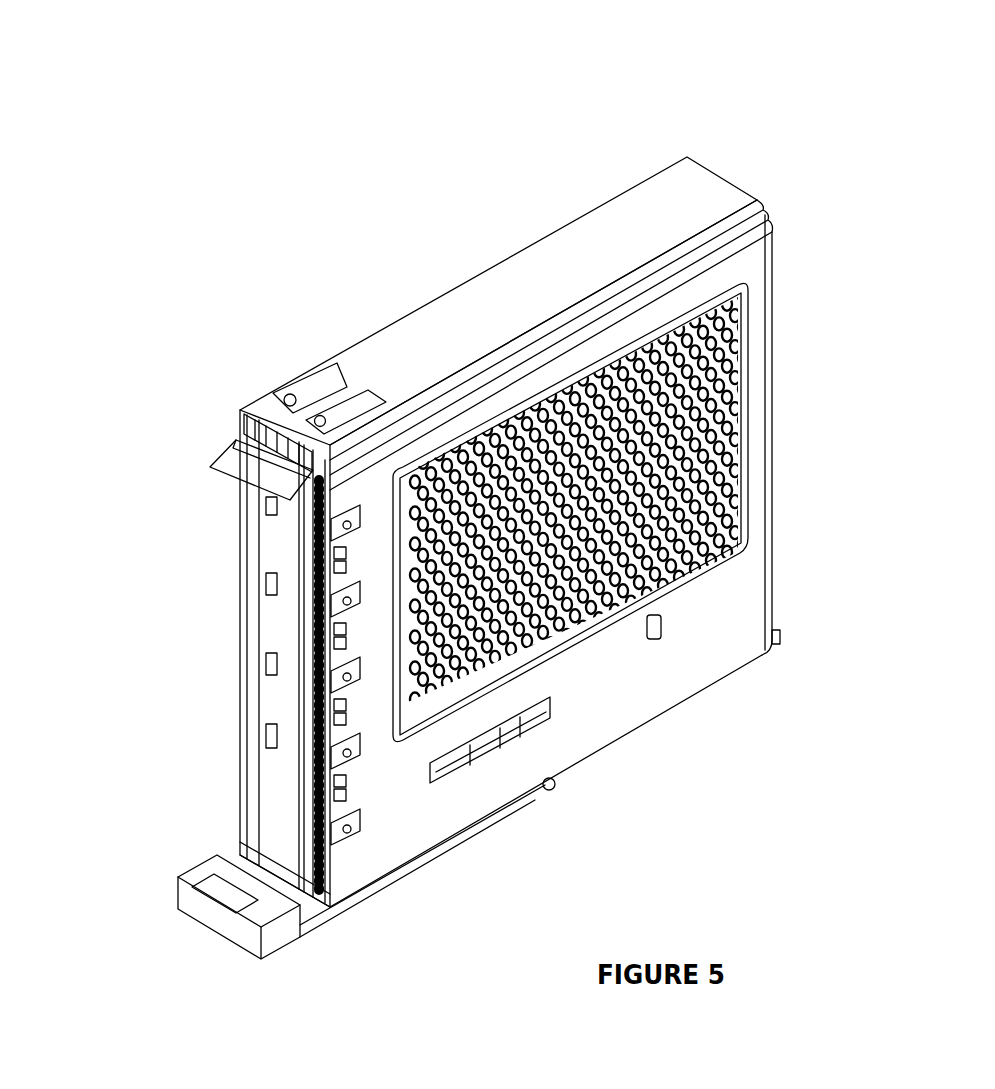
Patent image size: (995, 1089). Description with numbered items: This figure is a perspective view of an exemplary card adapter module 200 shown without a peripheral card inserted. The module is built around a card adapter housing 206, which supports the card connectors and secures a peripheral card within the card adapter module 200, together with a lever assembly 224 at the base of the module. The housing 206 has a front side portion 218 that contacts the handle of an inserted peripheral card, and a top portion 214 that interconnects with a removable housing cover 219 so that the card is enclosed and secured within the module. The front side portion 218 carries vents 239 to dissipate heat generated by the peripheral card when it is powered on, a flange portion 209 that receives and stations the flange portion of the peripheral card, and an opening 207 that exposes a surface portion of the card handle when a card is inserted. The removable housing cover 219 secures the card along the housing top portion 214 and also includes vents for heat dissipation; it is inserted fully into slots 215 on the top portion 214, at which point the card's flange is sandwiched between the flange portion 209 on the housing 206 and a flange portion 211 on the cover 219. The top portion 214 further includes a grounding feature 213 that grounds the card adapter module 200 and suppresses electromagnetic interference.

The card adapter module 200 is at (193, 63).
The top portion 214 is at (398, 351).
The slots 215 is at (758, 201).
The removable housing cover 219 is at (765, 503).
The grounding feature 213 is at (300, 378).
The flange portion 209 is at (233, 440).
The flange portion 211 is at (217, 467).
The opening 207 is at (270, 640).
The front side portion 218 is at (245, 760).
The housing 206 is at (290, 838).
The lever assembly 224 is at (288, 947).
The vents 239 is at (350, 803).